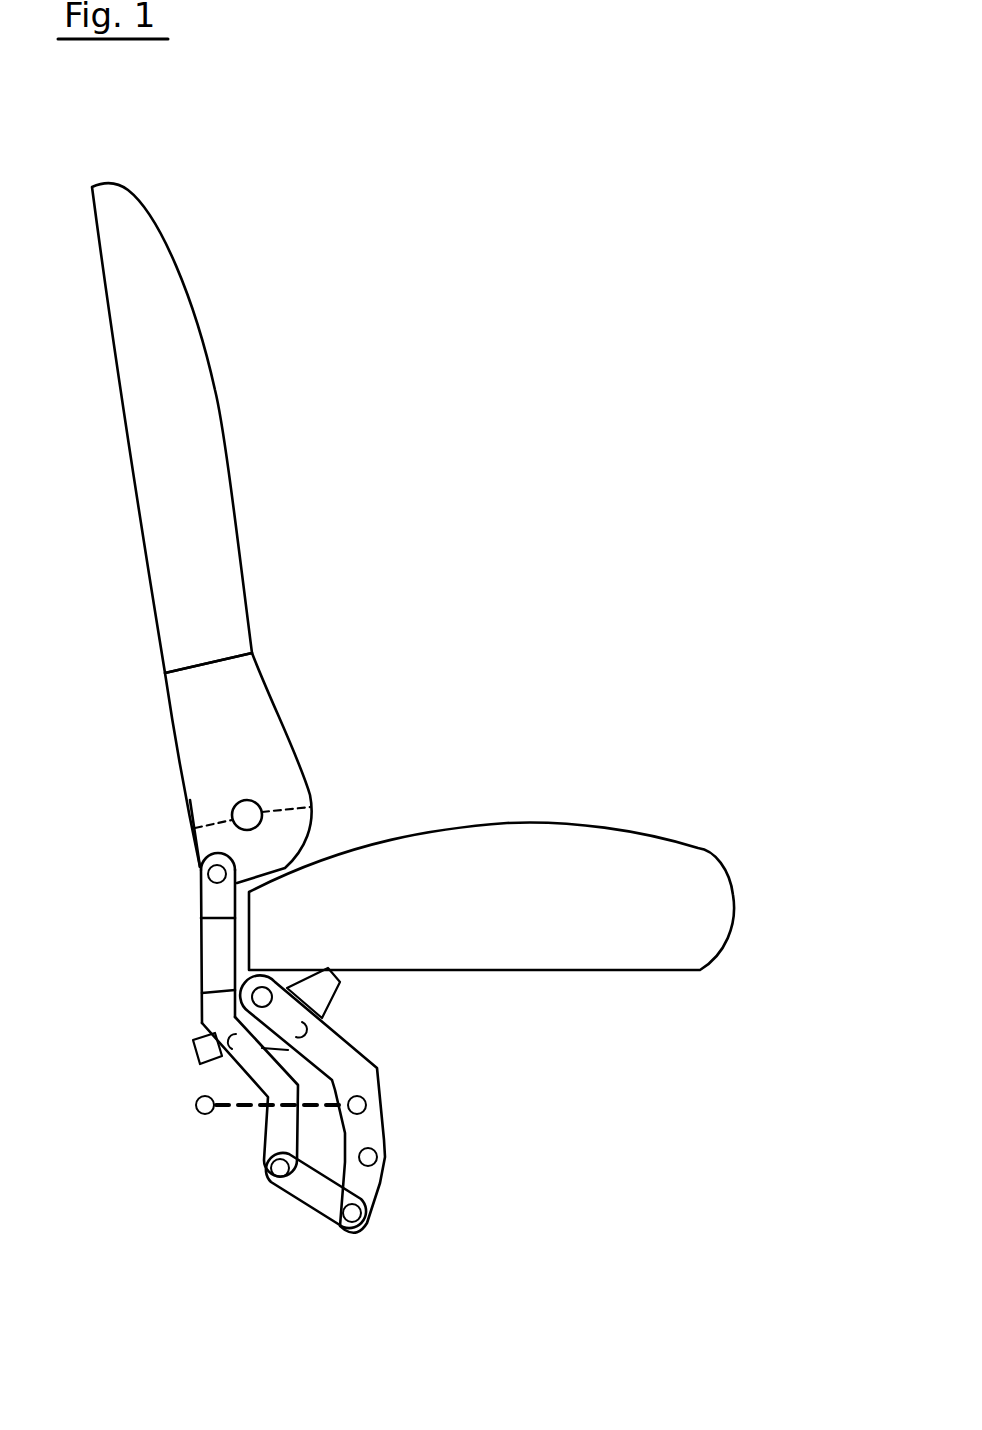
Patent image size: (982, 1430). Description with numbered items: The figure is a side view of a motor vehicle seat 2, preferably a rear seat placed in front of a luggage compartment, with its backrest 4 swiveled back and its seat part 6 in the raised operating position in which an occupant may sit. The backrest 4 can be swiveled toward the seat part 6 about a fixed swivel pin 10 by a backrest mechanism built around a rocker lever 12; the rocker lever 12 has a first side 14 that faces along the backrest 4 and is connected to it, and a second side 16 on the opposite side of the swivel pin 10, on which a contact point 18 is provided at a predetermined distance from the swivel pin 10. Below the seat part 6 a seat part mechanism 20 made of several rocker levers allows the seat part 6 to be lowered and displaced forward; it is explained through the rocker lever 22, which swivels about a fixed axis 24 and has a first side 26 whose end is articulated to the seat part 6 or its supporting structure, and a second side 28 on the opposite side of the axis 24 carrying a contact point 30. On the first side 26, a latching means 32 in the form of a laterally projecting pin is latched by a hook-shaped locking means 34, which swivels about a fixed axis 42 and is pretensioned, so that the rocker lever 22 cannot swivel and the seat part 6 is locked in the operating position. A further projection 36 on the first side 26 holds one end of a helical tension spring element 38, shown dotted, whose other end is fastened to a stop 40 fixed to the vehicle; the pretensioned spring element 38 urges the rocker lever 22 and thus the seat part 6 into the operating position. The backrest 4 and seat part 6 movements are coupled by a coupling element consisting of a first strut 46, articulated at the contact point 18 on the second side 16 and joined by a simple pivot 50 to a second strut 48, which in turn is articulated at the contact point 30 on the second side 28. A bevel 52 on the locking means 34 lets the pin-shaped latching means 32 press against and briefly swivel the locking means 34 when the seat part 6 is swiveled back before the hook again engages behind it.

The motor vehicle seat 2 is at (768, 307).
The backrest 4 is at (180, 368).
The seat part 6 is at (653, 855).
The swivel pin 10 is at (263, 810).
The rocker lever 12 is at (292, 705).
The first side 14 is at (222, 728).
The second side 16 is at (228, 843).
The contact point 18 is at (217, 873).
The seat part mechanism 20 is at (435, 1191).
The rocker lever 22 is at (405, 1122).
The fixed axis 24 is at (377, 1157).
The first side 26 is at (340, 1060).
The second side 28 is at (360, 1185).
The contact point 30 is at (358, 1220).
The latching means 32 is at (300, 1020).
The locking means 34 is at (195, 1060).
The projection 36 is at (365, 1100).
The spring element 38 is at (316, 1083).
The stop 40 is at (197, 1113).
The fixed axis 42 is at (197, 1045).
The first strut 46 is at (218, 1010).
The second strut 48 is at (313, 1190).
The pivot 50 is at (270, 1178).
The bevel 52 is at (332, 1008).